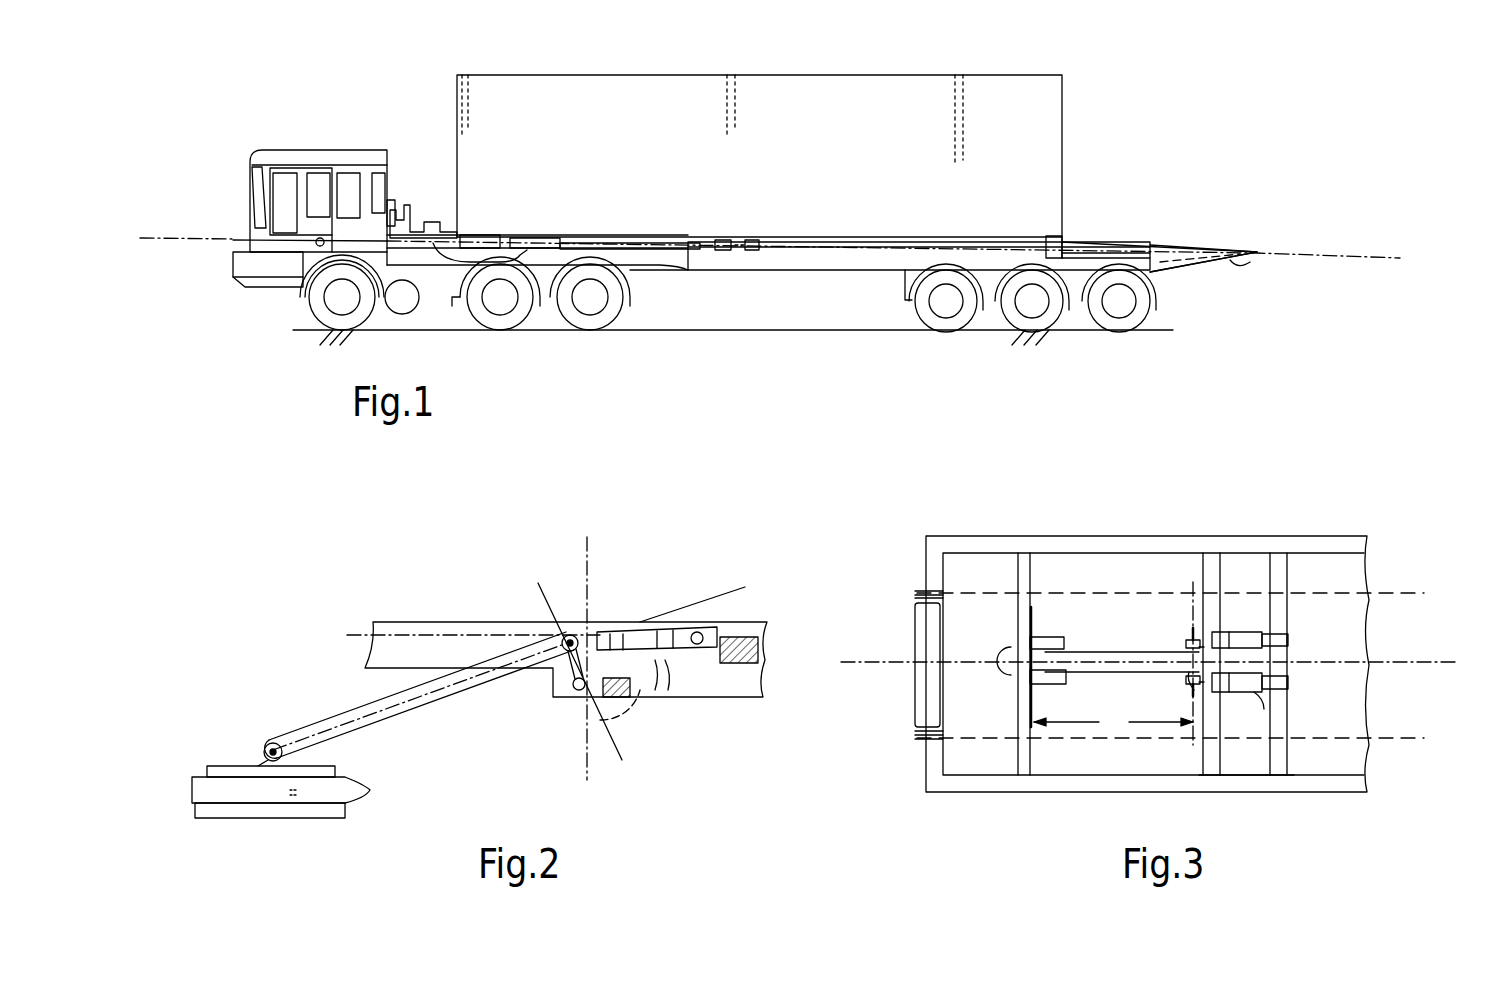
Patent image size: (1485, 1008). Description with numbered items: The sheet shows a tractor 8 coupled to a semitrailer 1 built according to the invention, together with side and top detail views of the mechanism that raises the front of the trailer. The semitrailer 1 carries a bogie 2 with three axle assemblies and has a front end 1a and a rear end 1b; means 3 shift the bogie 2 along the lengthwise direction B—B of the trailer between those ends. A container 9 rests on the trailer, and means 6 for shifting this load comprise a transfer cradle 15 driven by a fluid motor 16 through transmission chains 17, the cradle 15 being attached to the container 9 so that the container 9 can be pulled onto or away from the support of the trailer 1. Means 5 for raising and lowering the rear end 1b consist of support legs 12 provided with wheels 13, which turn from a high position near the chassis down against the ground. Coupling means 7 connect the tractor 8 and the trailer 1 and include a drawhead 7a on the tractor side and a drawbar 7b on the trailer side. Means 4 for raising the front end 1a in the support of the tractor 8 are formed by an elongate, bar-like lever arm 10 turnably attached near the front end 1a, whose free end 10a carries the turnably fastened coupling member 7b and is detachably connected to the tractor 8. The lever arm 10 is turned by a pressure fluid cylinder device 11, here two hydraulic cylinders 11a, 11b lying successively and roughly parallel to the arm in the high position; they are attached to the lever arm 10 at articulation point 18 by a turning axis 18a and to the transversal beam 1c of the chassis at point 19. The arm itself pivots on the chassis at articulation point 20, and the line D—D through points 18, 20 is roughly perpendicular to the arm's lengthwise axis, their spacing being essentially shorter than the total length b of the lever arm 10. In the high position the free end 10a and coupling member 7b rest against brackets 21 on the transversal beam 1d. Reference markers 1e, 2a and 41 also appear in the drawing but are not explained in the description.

In FIG. 1, the semitrailer 1 is at (858, 270).
In FIG. 1, the front end of the trailer 1a is at (482, 236).
In FIG. 3, the front end of the trailer 1a is at (1147, 536).
In FIG. 1, the rear end of the trailer 1b is at (1118, 245).
In FIG. 2, the transversal beam 1c is at (645, 700).
In FIG. 3, the transversal beam 1c is at (1216, 775).
In FIG. 3, the transversal beam 1d is at (1034, 775).
In FIG. 1, the frame stop 1e is at (770, 238).
In FIG. 1, the bogie 2 is at (990, 318).
In FIG. 1, the rear trailer wheel 2a is at (1122, 320).
In FIG. 1, the means for shifting the bogie 3 is at (1075, 270).
In FIG. 1, the means for raising the front end 4 is at (626, 257).
In FIG. 1, the means for raising and lowering the rear end 5 is at (1192, 218).
In FIG. 1, the means for shifting a load 6 is at (421, 195).
In FIG. 1, the coupling means 7 is at (560, 248).
In FIG. 1, the drawhead 7a is at (507, 318).
In FIG. 2, the drawhead 7a is at (192, 805).
In FIG. 1, the drawbar 7b is at (526, 240).
In FIG. 2, the drawbar 7b is at (238, 765).
In FIG. 3, the drawbar 7b is at (1014, 677).
In FIG. 1, the tractor 8 is at (250, 158).
In FIG. 1, the container 9 is at (759, 166).
In FIG. 1, the lever arm 10 is at (635, 235).
In FIG. 2, the lever arm 10 is at (440, 612).
In FIG. 3, the lever arm 10 is at (1122, 652).
In FIG. 3, the free end of the lever arm 10a is at (1038, 645).
In FIG. 1, the pressure fluid cylinder 11 is at (718, 237).
In FIG. 2, the pressure fluid cylinder 11 is at (665, 628).
In FIG. 3, the hydraulic cylinder 11a is at (1239, 632).
In FIG. 3, the hydraulic cylinder 11b is at (1254, 690).
In FIG. 1, the support legs 12 is at (1205, 282).
In FIG. 1, the wheels 13 is at (1245, 265).
In FIG. 2, the wheels 13 is at (725, 700).
In FIG. 1, the transfer cradle 15 is at (470, 250).
In FIG. 1, the fluid motor 16 is at (382, 205).
In FIG. 3, the fluid motor 16 is at (919, 624).
In FIG. 3, the transmission chains 17 is at (989, 593).
In FIG. 2, the articulation point 18 is at (568, 635).
In FIG. 3, the articulation point 18 is at (1184, 635).
In FIG. 3, the turning axis 18a is at (1254, 697).
In FIG. 2, the attachment point 19 is at (730, 620).
In FIG. 3, the attachment point 19 is at (1272, 624).
In FIG. 2, the articulation point 20 is at (578, 695).
In FIG. 3, the articulation point 20 is at (1189, 687).
In FIG. 3, the brackets 21 is at (1201, 664).
In FIG. 1, the ground 41 is at (1180, 342).
In FIG. 1, the lengthwise direction B— B is at (770, 232).
In FIG. 3, the lengthwise direction B— B is at (1150, 684).
In FIG. 2, the line D— D is at (579, 664).
In FIG. 3, the total length of the lever arm b is at (1113, 721).